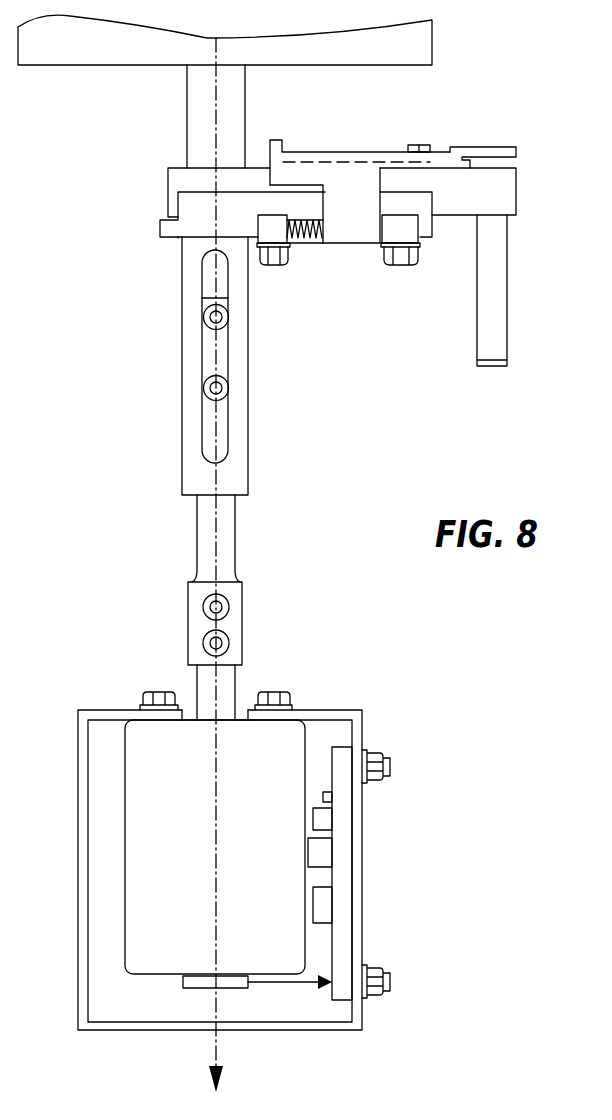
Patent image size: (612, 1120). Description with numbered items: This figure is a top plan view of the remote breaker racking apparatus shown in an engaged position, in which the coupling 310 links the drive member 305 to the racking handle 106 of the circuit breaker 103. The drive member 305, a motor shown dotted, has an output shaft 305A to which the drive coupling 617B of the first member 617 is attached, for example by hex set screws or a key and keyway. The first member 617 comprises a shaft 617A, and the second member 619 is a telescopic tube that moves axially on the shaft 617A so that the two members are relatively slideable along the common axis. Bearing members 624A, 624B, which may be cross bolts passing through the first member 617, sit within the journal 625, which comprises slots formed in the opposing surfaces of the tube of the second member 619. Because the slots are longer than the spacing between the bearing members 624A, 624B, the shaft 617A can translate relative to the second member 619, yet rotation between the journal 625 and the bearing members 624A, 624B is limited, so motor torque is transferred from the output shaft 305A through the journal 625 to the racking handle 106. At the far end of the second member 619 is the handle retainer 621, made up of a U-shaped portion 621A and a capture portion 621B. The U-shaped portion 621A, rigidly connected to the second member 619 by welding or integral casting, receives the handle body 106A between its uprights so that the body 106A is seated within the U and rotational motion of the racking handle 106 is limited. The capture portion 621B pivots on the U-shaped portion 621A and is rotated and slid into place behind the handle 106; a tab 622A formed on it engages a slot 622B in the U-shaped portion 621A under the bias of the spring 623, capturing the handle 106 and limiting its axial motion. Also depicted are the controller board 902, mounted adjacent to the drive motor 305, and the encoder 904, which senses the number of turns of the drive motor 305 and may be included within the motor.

The circuit breaker 103 is at (103, 55).
The racking handle 106 is at (163, 184).
The handle body 106A is at (438, 182).
The coupling 310 is at (198, 366).
The drive member 305 is at (281, 855).
The output shaft 305A is at (237, 682).
The first member 617 is at (203, 580).
The shaft 617A is at (236, 539).
The drive coupling 617B is at (188, 617).
The second member 619 is at (254, 452).
The handle retainer 621 is at (347, 251).
The U-shaped portion 621A is at (202, 215).
The capture portion 621B is at (308, 173).
The tab 622A is at (413, 143).
The slot 622B is at (422, 158).
The spring 623 is at (303, 246).
The bearing member 624A is at (228, 315).
The bearing member 624B is at (228, 389).
The journal 625 is at (210, 357).
The controller board 902 is at (345, 857).
The encoder 904 is at (203, 990).